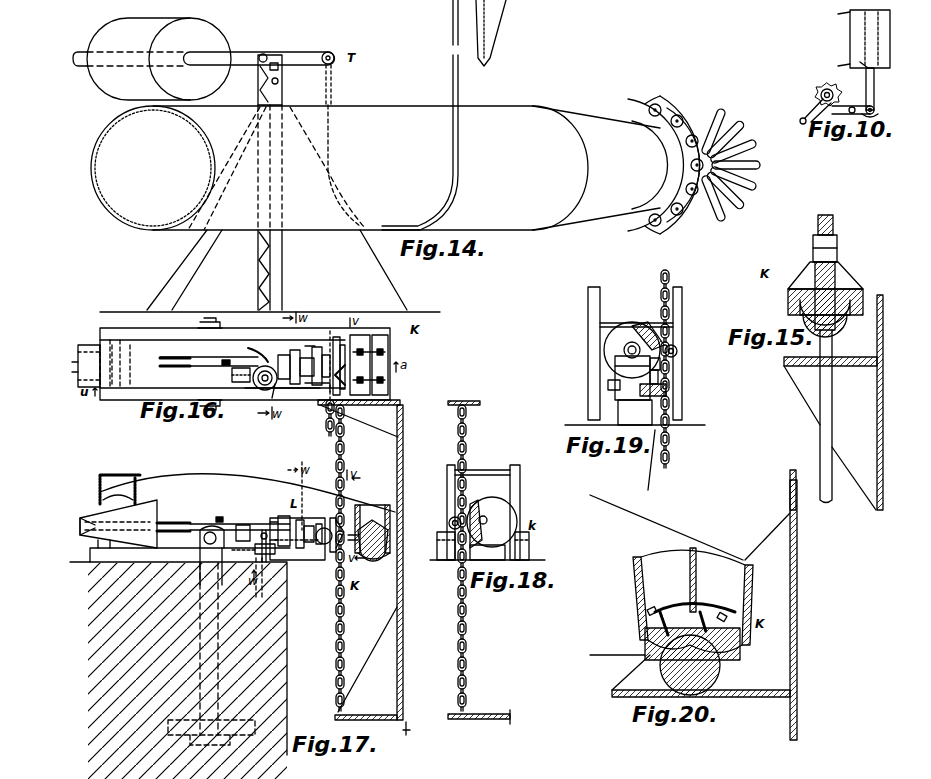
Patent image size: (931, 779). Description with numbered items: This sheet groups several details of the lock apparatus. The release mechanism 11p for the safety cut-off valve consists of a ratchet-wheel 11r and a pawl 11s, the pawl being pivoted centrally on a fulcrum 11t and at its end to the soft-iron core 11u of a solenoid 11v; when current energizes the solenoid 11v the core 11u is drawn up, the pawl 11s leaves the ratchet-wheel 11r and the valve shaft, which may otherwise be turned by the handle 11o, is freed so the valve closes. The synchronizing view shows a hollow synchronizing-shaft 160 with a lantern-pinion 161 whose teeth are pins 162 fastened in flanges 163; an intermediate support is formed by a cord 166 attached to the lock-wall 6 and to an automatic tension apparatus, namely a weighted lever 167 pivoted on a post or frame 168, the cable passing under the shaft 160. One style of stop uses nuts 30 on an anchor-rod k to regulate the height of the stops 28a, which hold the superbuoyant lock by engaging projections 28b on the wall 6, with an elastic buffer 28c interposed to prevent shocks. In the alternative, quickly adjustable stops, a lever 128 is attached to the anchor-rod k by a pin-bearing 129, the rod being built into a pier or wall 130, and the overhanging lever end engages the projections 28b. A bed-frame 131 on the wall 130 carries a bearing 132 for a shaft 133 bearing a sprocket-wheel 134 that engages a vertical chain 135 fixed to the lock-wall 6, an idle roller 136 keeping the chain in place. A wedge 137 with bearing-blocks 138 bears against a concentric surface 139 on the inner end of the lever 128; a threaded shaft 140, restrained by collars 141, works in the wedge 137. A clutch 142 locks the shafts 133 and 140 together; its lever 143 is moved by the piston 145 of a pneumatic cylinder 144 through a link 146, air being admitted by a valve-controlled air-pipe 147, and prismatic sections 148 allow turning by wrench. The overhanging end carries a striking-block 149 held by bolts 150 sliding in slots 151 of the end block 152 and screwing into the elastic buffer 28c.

In FIG. 14, the weighted lever 167 is at (204, 61).
In FIG. 14, the post or frame 168 is at (284, 253).
In FIG. 14, the synchronizing-shaft 160 is at (375, 168).
In FIG. 14, the cord 166 is at (457, 80).
In FIG. 14, the pinion 161 is at (718, 165).
In FIG. 14, the pins 162 is at (730, 165).
In FIG. 14, the flanges 163 is at (770, 186).
In FIG. 10, the solenoid 11v is at (854, 39).
In FIG. 10, the soft-iron core 11u is at (876, 88).
In FIG. 10, the pawl 11s is at (882, 113).
In FIG. 10, the fulcrum 11t is at (851, 102).
In FIG. 10, the ratchet-wheel 11r is at (816, 94).
In FIG. 10, the handle 11o is at (805, 115).
In FIG. 10, the releasing mechanism 11p is at (828, 66).
In FIG. 15, the nuts 30 is at (840, 250).
In FIG. 15, the stops 28a is at (831, 295).
In FIG. 15, the elastic buffer 28c is at (846, 328).
In FIG. 20, the elastic buffer 28c is at (708, 672).
In FIG. 15, the anchor-rod k is at (833, 416).
In FIG. 15, the projections 28b is at (833, 402).
In FIG. 20, the projections 28b is at (690, 614).
In FIG. 16, the lever 128 is at (270, 356).
In FIG. 17, the lever 128 is at (247, 493).
In FIG. 18, the lever 128 is at (520, 483).
In FIG. 19, the lever 128 is at (600, 295).
In FIG. 20, the lever 128 is at (666, 527).
In FIG. 16, the wedge 137 is at (101, 366).
In FIG. 17, the wedge 137 is at (118, 524).
In FIG. 16, the pin-bearing 129 is at (211, 358).
In FIG. 17, the pin-bearing 129 is at (202, 555).
In FIG. 18, the pin-bearing 129 is at (530, 544).
In FIG. 16, the bed-frame 131 is at (209, 354).
In FIG. 17, the bed-frame 131 is at (190, 555).
In FIG. 18, the bed-frame 131 is at (487, 552).
In FIG. 19, the bed-frame 131 is at (635, 432).
In FIG. 16, the threaded bar or shaft 140 is at (179, 368).
In FIG. 17, the threaded bar or shaft 140 is at (178, 519).
In FIG. 16, the prismatic sections 148 is at (227, 354).
In FIG. 17, the prismatic sections 148 is at (240, 517).
In FIG. 16, the valve-controlled air-pipe 147 is at (263, 350).
In FIG. 17, the valve-controlled air-pipe 147 is at (258, 578).
In FIG. 19, the valve-controlled air-pipe 147 is at (633, 412).
In FIG. 16, the lever 143 is at (239, 379).
In FIG. 17, the lever 143 is at (236, 536).
In FIG. 19, the lever 143 is at (660, 366).
In FIG. 16, the pneumatic cylinder 144 is at (266, 384).
In FIG. 17, the pneumatic cylinder 144 is at (253, 551).
In FIG. 19, the pneumatic cylinder 144 is at (666, 390).
In FIG. 16, the clutch 142 is at (289, 363).
In FIG. 17, the clutch 142 is at (314, 522).
In FIG. 19, the clutch 142 is at (632, 350).
In FIG. 16, the shaft 133 is at (323, 369).
In FIG. 17, the shaft 133 is at (319, 534).
In FIG. 18, the shaft 133 is at (484, 516).
In FIG. 16, the sprocket-wheel 134 is at (339, 360).
In FIG. 17, the sprocket-wheel 134 is at (348, 524).
In FIG. 18, the sprocket-wheel 134 is at (500, 532).
In FIG. 19, the sprocket-wheel 134 is at (642, 326).
In FIG. 16, the chain 135 is at (347, 389).
In FIG. 17, the chain 135 is at (346, 447).
In FIG. 18, the chain 135 is at (468, 425).
In FIG. 19, the chain 135 is at (670, 476).
In FIG. 16, the wall of the lock 6 is at (365, 418).
In FIG. 17, the wall of the lock 6 is at (372, 570).
In FIG. 18, the wall of the lock 6 is at (480, 403).
In FIG. 20, the wall of the lock 6 is at (797, 568).
In FIG. 16, the pier or wall 130 is at (341, 385).
In FIG. 17, the pier or wall 130 is at (268, 620).
In FIG. 17, the bearing-blocks 138 is at (119, 512).
In FIG. 17, the concentric surface 139 is at (98, 505).
In FIG. 17, the link 146 is at (263, 534).
In FIG. 19, the link 146 is at (658, 378).
In FIG. 17, the collars 141 is at (284, 514).
In FIG. 17, the bearing 132 is at (297, 540).
In FIG. 19, the bearing 132 is at (632, 378).
In FIG. 17, the end block 152 is at (372, 510).
In FIG. 20, the end block 152 is at (700, 576).
In FIG. 17, the striking-block 149 is at (378, 556).
In FIG. 20, the striking-block 149 is at (728, 652).
In FIG. 18, the idle roller 136 is at (446, 522).
In FIG. 19, the idle roller 136 is at (677, 351).
In FIG. 19, the piston 145 is at (623, 387).
In FIG. 20, the bolts 150 is at (686, 612).
In FIG. 20, the slots 151 is at (698, 614).